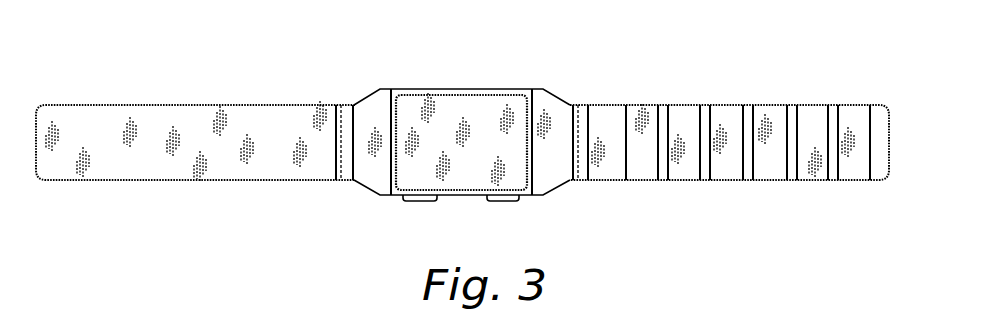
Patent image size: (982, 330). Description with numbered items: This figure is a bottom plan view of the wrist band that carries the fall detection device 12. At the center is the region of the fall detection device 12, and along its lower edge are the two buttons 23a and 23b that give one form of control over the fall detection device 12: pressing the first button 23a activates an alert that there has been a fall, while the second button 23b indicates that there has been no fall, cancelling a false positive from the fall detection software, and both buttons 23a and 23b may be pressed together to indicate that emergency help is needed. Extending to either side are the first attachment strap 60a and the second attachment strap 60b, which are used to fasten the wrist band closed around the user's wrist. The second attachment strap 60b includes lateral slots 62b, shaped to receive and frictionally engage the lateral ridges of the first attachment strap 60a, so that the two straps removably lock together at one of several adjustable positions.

The fall detection device 12 is at (455, 107).
The first button 23a is at (418, 202).
The second button 23b is at (504, 202).
The first attachment strap 60a is at (157, 105).
The second attachment strap 60b is at (725, 105).
The lateral slots 62b is at (750, 180).